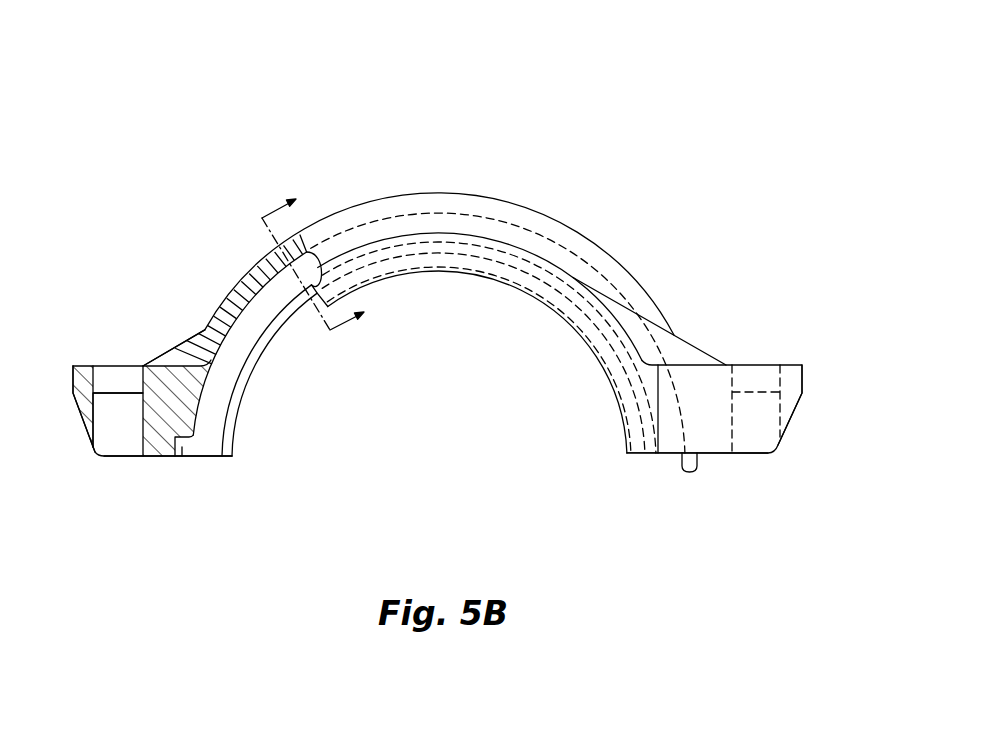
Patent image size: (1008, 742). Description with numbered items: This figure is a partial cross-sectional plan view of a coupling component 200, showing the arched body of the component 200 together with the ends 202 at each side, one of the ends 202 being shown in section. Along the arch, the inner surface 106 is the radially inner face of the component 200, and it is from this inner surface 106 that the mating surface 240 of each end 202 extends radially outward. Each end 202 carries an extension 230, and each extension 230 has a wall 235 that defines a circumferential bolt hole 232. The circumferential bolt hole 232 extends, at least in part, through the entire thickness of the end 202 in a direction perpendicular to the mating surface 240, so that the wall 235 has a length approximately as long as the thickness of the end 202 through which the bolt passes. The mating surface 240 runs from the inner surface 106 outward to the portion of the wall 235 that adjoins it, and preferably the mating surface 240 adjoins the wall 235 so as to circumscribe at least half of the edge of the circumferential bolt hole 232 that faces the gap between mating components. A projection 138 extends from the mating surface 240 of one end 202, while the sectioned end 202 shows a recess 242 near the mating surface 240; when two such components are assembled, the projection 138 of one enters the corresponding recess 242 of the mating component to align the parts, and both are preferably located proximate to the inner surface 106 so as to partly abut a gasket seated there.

The component 200 is at (476, 306).
The inner surface 106 is at (290, 366).
The extension 230 is at (136, 480).
The circumferential bolt hole 232 is at (130, 354).
The end 202 is at (81, 365).
The wall 235 is at (96, 414).
The mating surface 240 is at (157, 456).
The notch 242 is at (183, 458).
The projection 138 is at (690, 478).